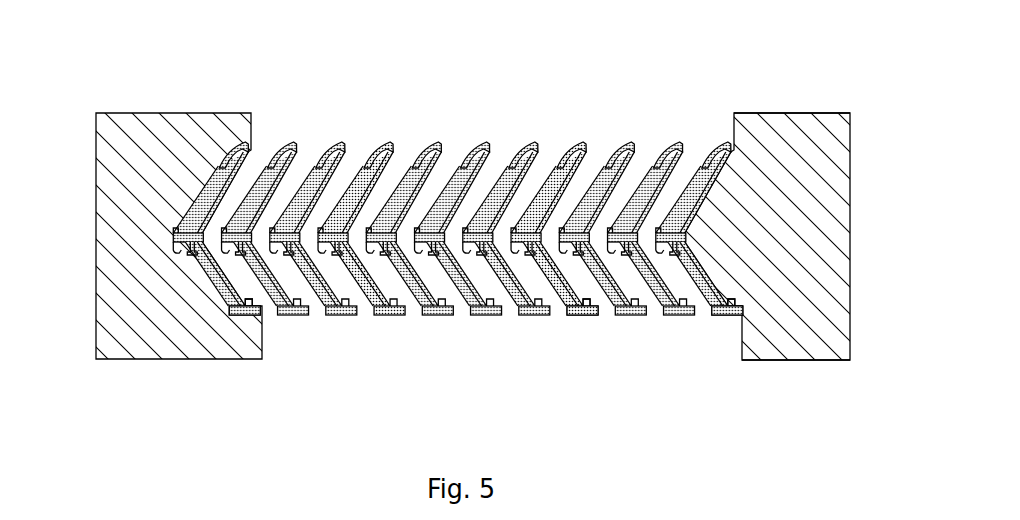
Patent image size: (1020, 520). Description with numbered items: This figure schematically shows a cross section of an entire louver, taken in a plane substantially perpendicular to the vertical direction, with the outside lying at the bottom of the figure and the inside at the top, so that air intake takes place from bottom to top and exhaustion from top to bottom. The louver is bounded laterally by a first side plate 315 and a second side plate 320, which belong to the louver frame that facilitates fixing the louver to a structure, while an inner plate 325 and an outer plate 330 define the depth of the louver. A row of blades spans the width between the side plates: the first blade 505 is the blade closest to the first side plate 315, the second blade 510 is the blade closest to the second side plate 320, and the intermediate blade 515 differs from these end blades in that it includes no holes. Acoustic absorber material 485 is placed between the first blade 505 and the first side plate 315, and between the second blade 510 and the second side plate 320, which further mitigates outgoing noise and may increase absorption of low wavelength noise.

The first side plate 315 is at (95, 217).
The second side plate 320 is at (851, 278).
The inner plate 325 is at (780, 113).
The outer plate 330 is at (803, 362).
The acoustic absorber material 485 is at (140, 125).
The first blade 505 is at (238, 312).
The second blade 510 is at (728, 313).
The blade 515 is at (588, 313).